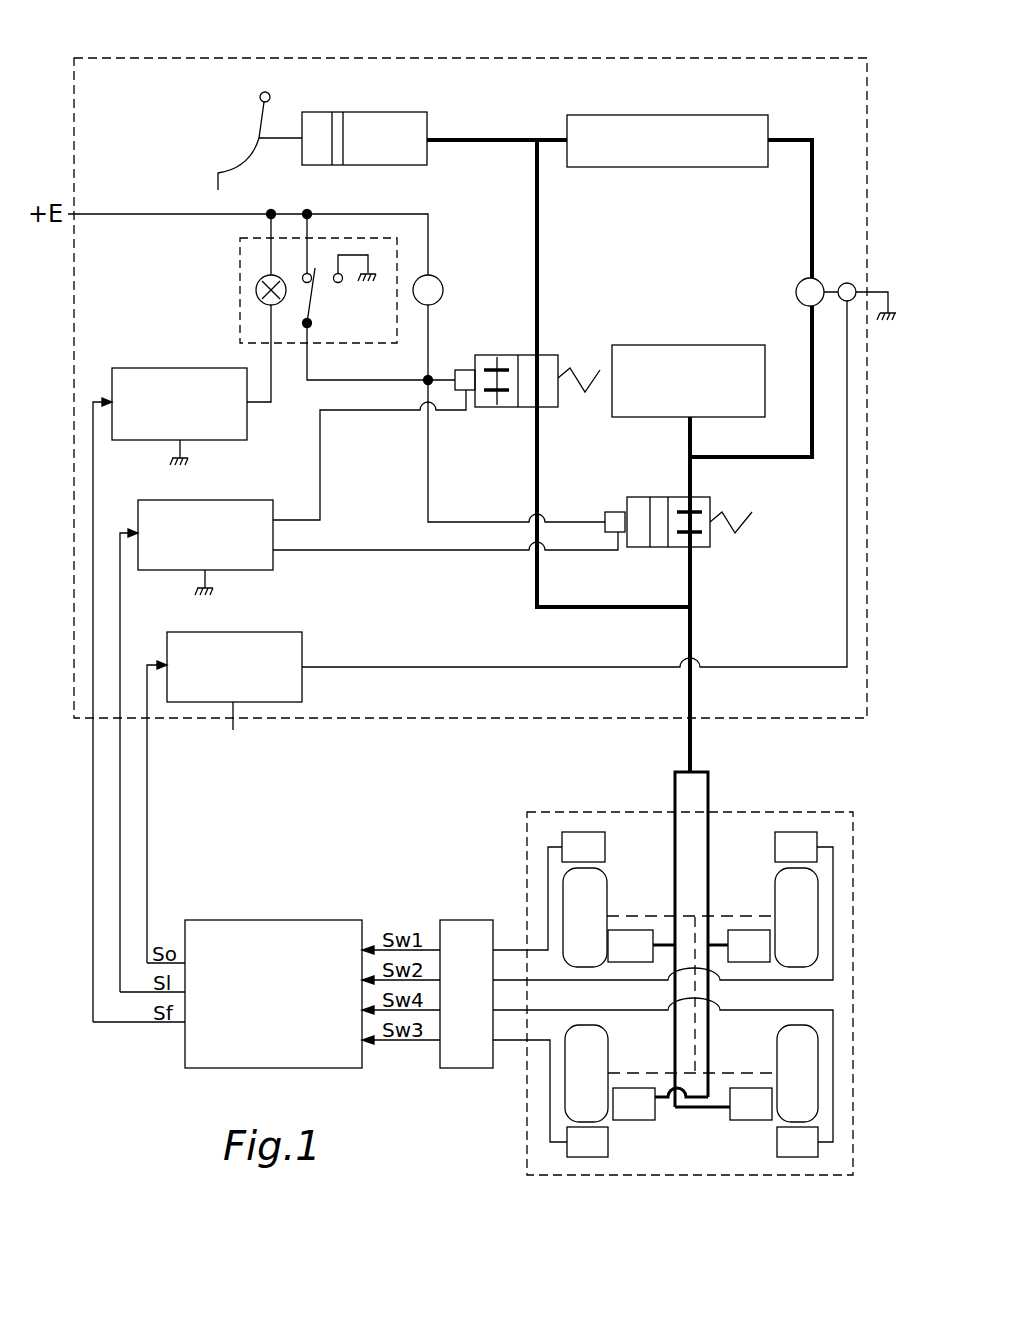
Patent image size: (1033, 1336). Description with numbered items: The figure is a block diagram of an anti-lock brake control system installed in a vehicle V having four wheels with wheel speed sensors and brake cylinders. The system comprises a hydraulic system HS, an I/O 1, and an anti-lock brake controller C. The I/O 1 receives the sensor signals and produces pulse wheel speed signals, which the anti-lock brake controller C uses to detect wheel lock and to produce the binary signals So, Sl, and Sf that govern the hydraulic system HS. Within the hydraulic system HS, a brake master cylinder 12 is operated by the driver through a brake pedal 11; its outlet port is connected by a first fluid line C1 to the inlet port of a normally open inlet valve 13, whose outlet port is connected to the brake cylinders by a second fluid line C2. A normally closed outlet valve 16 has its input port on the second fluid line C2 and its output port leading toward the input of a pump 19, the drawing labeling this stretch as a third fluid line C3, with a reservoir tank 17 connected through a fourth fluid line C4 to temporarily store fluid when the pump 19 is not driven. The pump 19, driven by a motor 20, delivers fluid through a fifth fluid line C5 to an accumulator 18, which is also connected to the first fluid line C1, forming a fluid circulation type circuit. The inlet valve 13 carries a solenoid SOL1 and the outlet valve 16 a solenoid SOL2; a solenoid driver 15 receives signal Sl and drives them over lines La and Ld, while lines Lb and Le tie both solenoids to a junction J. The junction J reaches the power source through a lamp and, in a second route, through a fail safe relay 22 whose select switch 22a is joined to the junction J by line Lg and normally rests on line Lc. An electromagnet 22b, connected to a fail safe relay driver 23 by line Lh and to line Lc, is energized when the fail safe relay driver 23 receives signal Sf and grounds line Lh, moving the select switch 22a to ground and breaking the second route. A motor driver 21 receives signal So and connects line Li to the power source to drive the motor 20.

The I/O 1 is at (456, 920).
The brake pedal 11 is at (257, 121).
The brake master cylinder 12 is at (388, 112).
The inlet valve 13 is at (490, 355).
The solenoid driver 15 is at (247, 500).
The outlet valve 16 is at (652, 548).
The reservoir tank 17 is at (689, 345).
The accumulator 18 is at (662, 115).
The pump 19 is at (796, 292).
The motor 20 is at (847, 283).
The motor driver 21 is at (275, 632).
The fail safe relay 22 is at (286, 310).
The select switch 22a is at (313, 290).
The electromagnet 22b is at (258, 280).
The fail safe relay driver 23 is at (178, 368).
The anti-lock brake controller C is at (287, 920).
The vehicle V is at (590, 812).
The hydraulic system HS is at (747, 57).
The solenoid SOL1 is at (468, 368).
The solenoid SOL2 is at (614, 512).
The first fluid line C1 is at (494, 140).
The second fluid line C2 is at (540, 440).
The hydraulic conduit C3 is at (692, 582).
The fourth fluid line C4 is at (810, 431).
The fifth fluid line C5 is at (814, 177).
The line La is at (320, 466).
The line Lb is at (440, 378).
The line Lc is at (431, 247).
The line Ld is at (383, 553).
The line Le is at (475, 524).
The line Lg is at (352, 378).
The line Lh is at (275, 395).
The line Li is at (850, 447).
The junction J is at (423, 382).